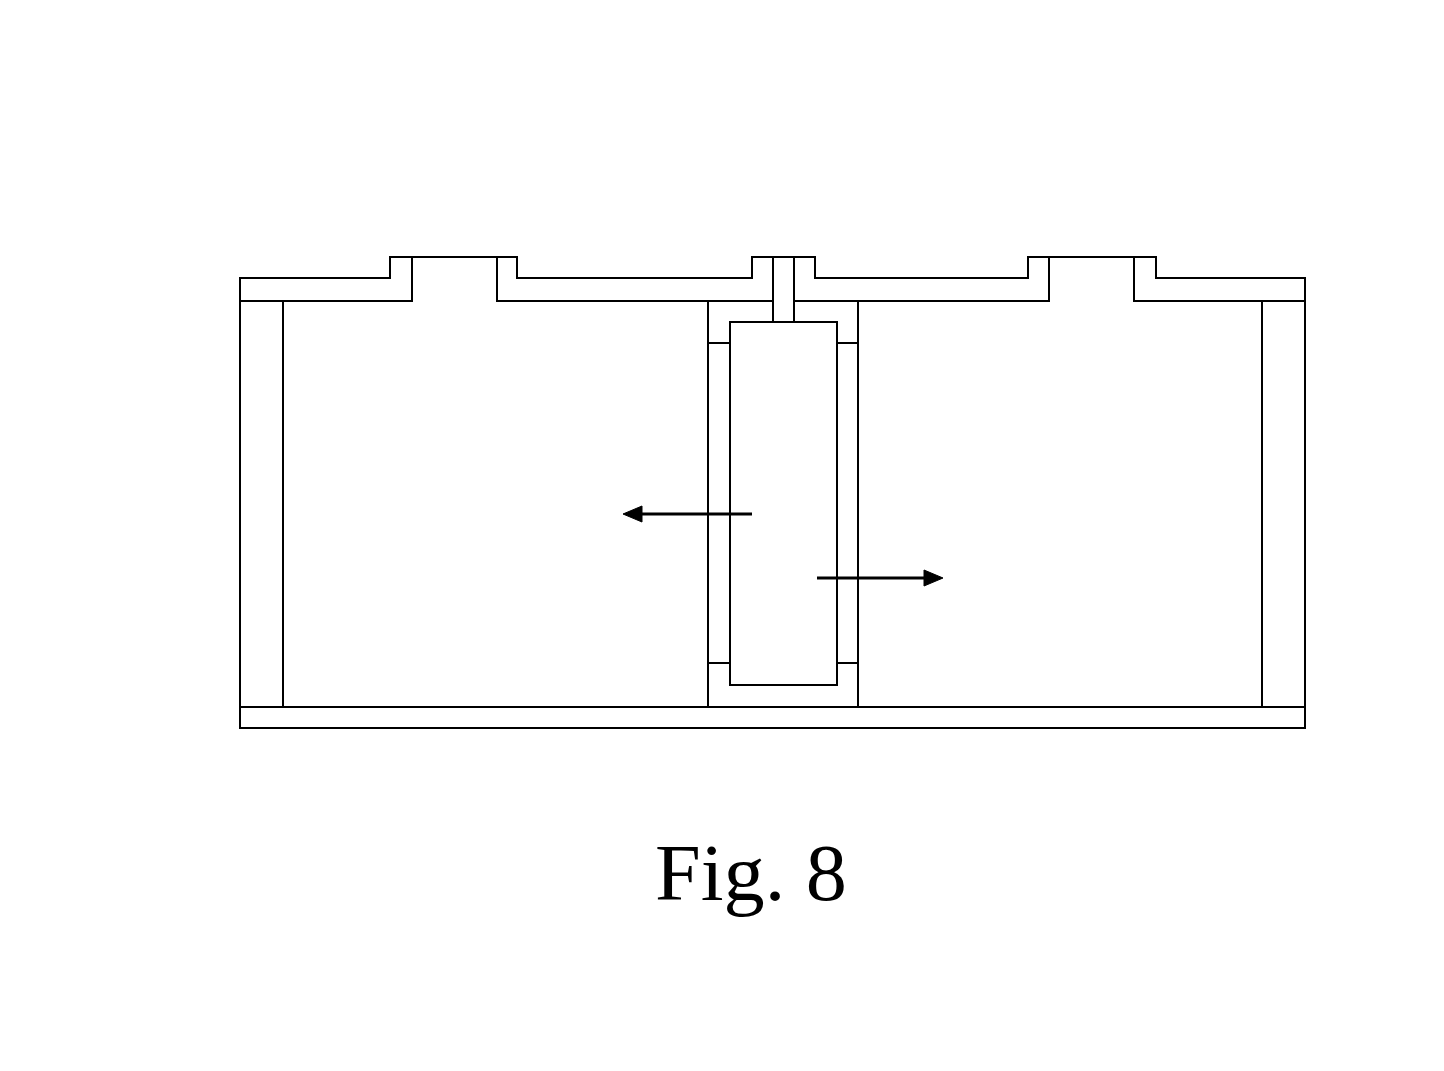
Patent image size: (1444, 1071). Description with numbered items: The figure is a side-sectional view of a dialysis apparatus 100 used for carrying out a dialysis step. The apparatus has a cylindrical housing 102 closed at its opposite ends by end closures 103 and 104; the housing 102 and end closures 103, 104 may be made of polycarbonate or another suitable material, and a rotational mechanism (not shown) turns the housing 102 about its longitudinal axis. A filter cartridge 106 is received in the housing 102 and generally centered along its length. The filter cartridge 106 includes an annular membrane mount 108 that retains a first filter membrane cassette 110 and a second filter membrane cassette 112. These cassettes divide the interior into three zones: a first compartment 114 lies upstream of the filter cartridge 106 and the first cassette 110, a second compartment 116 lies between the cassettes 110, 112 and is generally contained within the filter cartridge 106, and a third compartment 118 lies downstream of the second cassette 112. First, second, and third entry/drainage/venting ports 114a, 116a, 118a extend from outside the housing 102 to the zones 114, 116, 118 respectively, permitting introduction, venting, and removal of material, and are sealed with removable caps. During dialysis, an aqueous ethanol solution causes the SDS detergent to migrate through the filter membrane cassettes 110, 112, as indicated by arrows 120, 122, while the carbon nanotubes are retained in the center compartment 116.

The dialysis apparatus 100 is at (1222, 140).
The cylindrical housing 102 is at (305, 278).
The end closure 103 is at (262, 378).
The end closure 104 is at (1285, 335).
The filter cartridge 106 is at (912, 380).
The annular membrane mount 108 is at (708, 685).
The first filter membrane cassette 110 is at (858, 430).
The second filter membrane cassette 112 is at (708, 409).
The first zone or compartment 114 is at (1130, 489).
The first entry/drainage/venting port 114a is at (1093, 257).
The second zone or compartment 116 is at (790, 466).
The second entry/drainage/venting port 116a is at (778, 257).
The third zone or compartment 118 is at (425, 509).
The third entry/drainage/venting port 118a is at (458, 278).
The arrow 120 is at (903, 578).
The arrow 122 is at (670, 514).